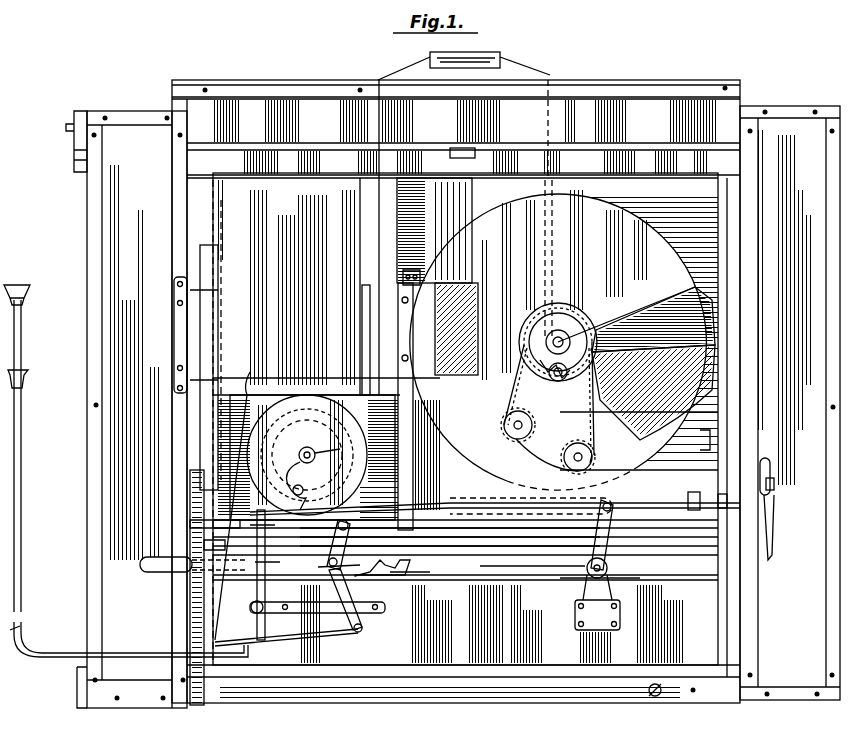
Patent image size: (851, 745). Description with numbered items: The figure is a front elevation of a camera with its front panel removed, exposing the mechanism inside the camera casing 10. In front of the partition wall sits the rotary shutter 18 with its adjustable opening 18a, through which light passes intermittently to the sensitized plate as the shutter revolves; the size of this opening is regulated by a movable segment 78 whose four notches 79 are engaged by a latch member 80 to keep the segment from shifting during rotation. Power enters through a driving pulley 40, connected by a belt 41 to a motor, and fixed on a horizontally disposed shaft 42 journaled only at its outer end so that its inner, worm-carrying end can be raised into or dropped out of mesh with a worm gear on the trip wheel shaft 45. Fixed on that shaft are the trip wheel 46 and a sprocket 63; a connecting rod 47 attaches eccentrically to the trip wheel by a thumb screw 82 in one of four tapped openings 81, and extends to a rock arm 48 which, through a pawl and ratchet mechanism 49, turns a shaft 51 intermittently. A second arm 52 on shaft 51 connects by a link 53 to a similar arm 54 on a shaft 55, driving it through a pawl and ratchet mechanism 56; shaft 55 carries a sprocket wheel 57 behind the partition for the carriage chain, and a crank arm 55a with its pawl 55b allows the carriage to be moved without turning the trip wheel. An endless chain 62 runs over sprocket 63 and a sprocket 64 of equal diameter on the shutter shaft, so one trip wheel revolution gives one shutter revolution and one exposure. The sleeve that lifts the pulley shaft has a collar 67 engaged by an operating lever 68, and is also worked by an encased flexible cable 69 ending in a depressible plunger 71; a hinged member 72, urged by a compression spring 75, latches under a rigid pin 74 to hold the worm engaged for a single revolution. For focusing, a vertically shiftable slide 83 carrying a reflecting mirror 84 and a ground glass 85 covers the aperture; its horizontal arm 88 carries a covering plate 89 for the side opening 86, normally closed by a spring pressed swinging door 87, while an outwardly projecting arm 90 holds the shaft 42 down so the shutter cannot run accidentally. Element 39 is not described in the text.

The camera casing 10 is at (134, 113).
The rotary shutter 18 is at (564, 335).
The adjustable opening 18a is at (653, 319).
The bracket 39 is at (70, 125).
The driving pulley 40 is at (770, 482).
The belt 41 is at (772, 536).
The horizontally disposed shaft 42 is at (668, 502).
The trip wheel shaft 45 is at (330, 451).
The trip wheel 46 is at (307, 451).
The connecting rod 47 is at (515, 505).
The rock arm 48 is at (612, 547).
The pawl and ratchet mechanism 49 is at (585, 566).
The shaft 51 is at (612, 566).
The second arm 52 is at (575, 532).
The link 53 is at (468, 505).
The arm 54 is at (350, 540).
The shaft 55 is at (320, 565).
The crank arm 55a is at (370, 598).
The pawl 55b is at (400, 567).
The pawl and ratchet mechanism 56 is at (317, 597).
The sprocket wheel 57 is at (286, 641).
The endless chain 62 is at (504, 425).
The sprocket 63 is at (306, 428).
The sprocket 64 is at (540, 340).
The collar 67 is at (251, 606).
The operating lever 68 is at (158, 567).
The encased flexible cable 69 is at (20, 480).
The depressible plunger 71 is at (17, 325).
The hinged member 72 is at (241, 496).
The rigid pin 74 is at (232, 516).
The compression spring 75 is at (222, 545).
The movable segment 78 is at (559, 300).
The notches 79 is at (548, 374).
The latch member 80 is at (565, 383).
The tapped openings 81 is at (288, 484).
The thumb screw 82 is at (321, 545).
The vertically shiftable slide 83 is at (522, 75).
The reflecting mirror 84 is at (440, 322).
The ground glass 85 is at (368, 322).
The opening 86 is at (218, 292).
The swinging door 87 is at (180, 300).
The horizontal arm 88 is at (300, 380).
The covering plate 89 is at (218, 328).
The outwardly projecting arm 90 is at (410, 420).